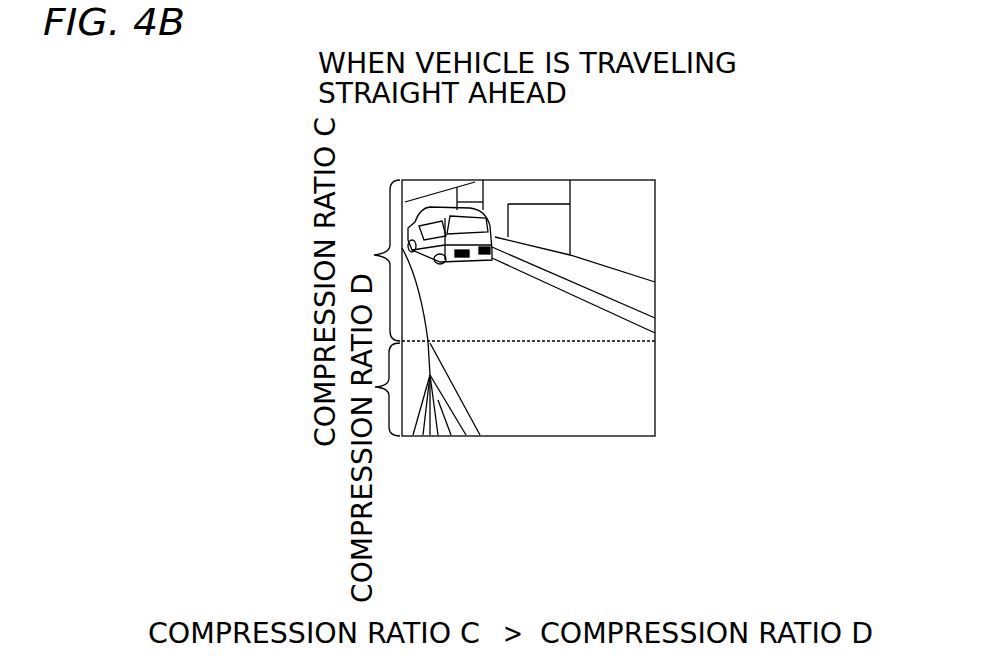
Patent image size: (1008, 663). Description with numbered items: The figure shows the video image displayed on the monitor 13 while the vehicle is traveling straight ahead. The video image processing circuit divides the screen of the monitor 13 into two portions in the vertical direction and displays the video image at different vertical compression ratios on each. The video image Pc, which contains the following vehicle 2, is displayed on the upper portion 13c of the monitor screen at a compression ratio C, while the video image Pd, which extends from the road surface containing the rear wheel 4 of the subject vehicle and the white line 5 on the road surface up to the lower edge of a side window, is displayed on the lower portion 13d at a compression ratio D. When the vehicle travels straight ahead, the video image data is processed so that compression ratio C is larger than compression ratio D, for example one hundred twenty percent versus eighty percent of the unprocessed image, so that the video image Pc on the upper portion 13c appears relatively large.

The monitor 13 is at (440, 175).
The upper portion of the monitor screen 13c is at (633, 190).
The lower portion of the monitor screen 13d is at (637, 423).
The video image Pc is at (597, 205).
The video image Pd is at (589, 420).
The following vehicle 2 is at (473, 270).
The white line 5 is at (443, 367).
The rear wheel 4 is at (448, 405).